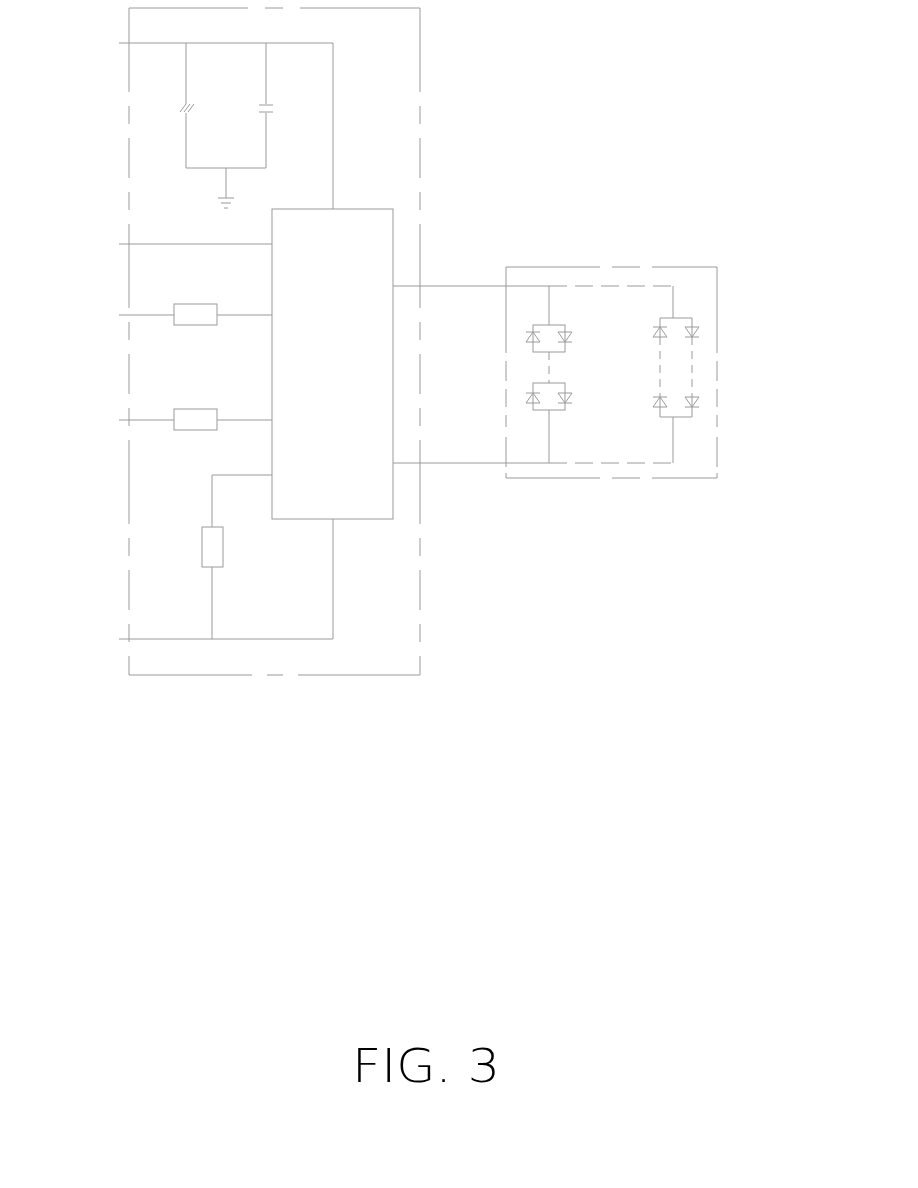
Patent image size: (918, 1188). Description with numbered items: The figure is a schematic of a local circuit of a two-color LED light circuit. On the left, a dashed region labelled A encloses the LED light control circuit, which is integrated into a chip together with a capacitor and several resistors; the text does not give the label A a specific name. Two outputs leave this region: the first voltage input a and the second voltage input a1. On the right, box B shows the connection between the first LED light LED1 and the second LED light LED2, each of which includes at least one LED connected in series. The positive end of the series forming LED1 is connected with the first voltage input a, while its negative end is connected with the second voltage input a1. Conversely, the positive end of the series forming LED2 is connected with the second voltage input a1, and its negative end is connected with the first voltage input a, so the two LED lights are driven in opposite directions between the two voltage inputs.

The control circuit module A is at (420, 52).
The box B is at (659, 390).
The first voltage input a is at (458, 286).
The second voltage input a1 is at (458, 463).
The first LED light LED1 is at (692, 318).
The second LED light LED2 is at (533, 410).